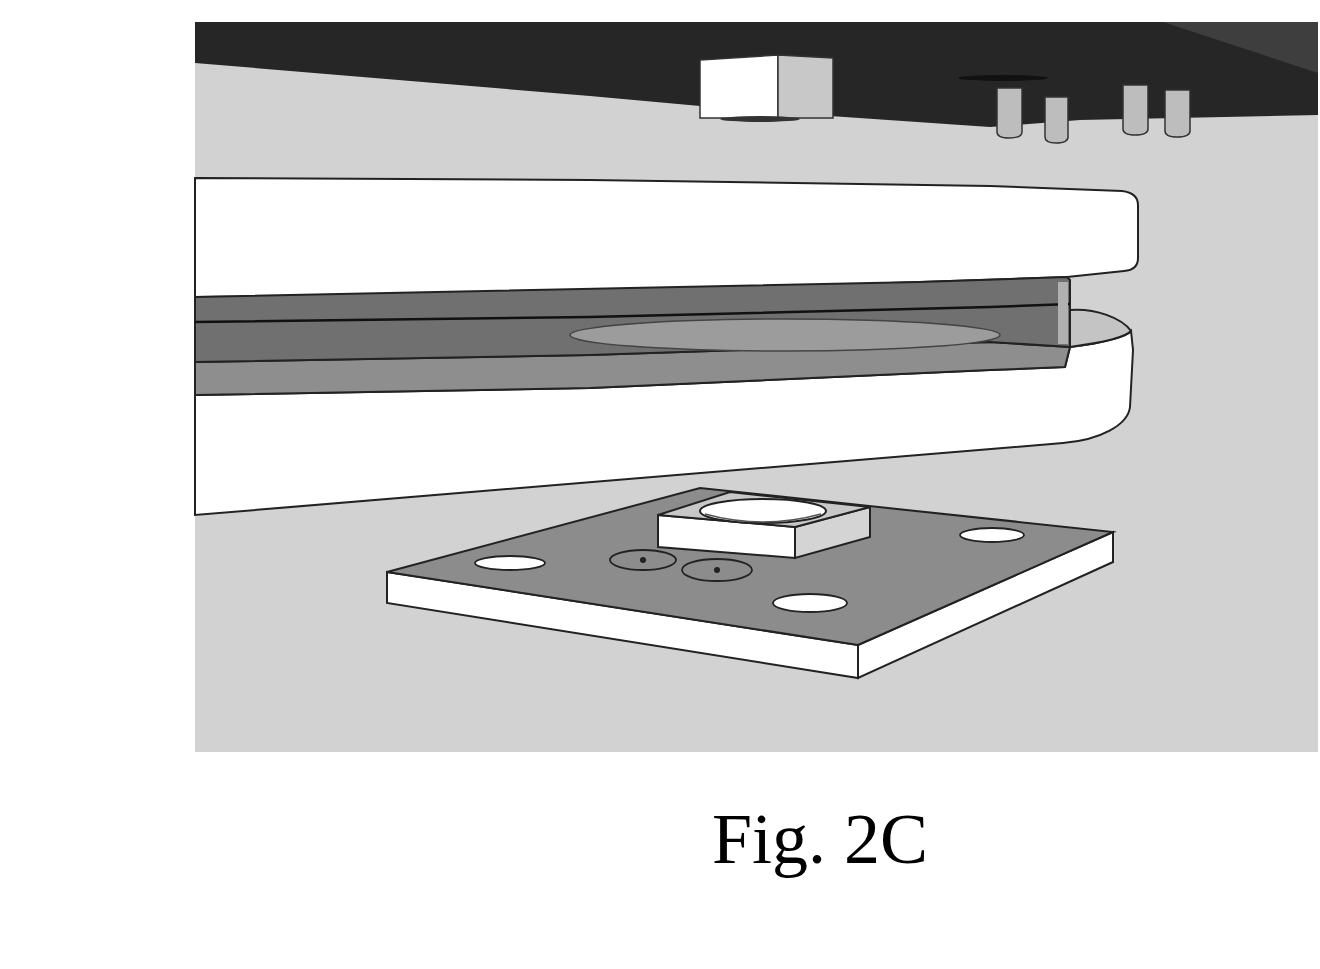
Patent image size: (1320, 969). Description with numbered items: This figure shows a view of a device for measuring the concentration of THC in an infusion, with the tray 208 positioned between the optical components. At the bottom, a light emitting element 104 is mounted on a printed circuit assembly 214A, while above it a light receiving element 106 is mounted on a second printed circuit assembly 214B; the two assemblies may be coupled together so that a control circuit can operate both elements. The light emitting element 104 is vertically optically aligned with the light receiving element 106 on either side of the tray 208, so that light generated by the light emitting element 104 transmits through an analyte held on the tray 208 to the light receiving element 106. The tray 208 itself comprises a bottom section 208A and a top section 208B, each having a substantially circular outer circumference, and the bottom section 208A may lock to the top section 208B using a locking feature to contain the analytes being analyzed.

The light emitting element 104 is at (847, 542).
The light receiving element 106 is at (817, 121).
The tray 208 is at (715, 346).
The bottom section 208A is at (1132, 365).
The top section 208B is at (1138, 233).
The printed circuit assembly 214A is at (1070, 582).
The printed circuit assembly 214B is at (1213, 112).